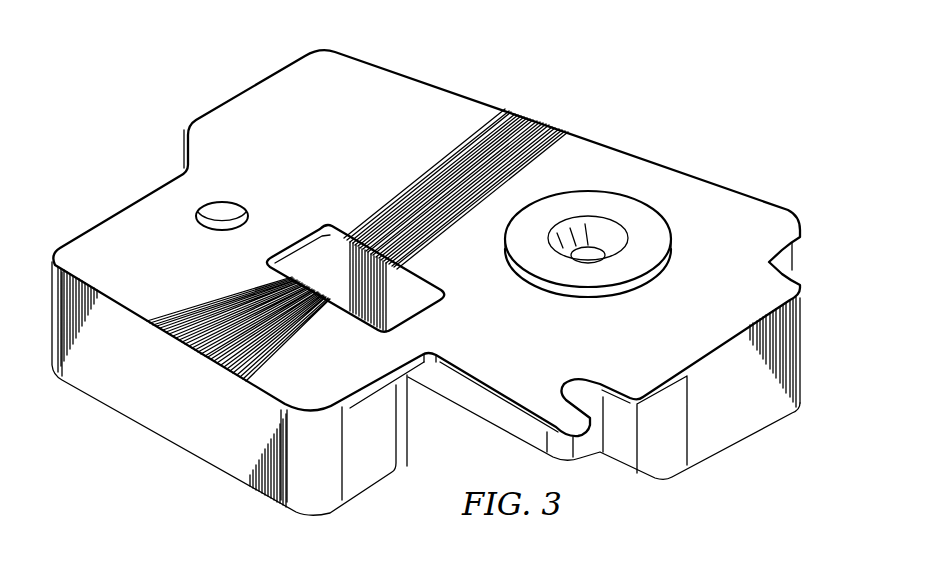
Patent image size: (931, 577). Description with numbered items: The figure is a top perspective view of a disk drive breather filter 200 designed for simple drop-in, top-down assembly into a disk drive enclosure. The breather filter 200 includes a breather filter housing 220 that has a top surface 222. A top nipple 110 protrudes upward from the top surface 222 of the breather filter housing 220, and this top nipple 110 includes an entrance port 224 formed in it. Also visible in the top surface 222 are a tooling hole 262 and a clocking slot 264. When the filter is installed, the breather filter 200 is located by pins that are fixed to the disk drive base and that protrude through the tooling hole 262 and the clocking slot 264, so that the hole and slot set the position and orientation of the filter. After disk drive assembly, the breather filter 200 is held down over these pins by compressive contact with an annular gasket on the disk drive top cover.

The breather filter 200 is at (598, 73).
The breather filter housing 220 is at (153, 422).
The top surface 222 is at (427, 96).
The tooling hole 262 is at (222, 218).
The top nipple 110 is at (525, 228).
The entrance port 224 is at (588, 252).
The clocking slot 264 is at (585, 398).